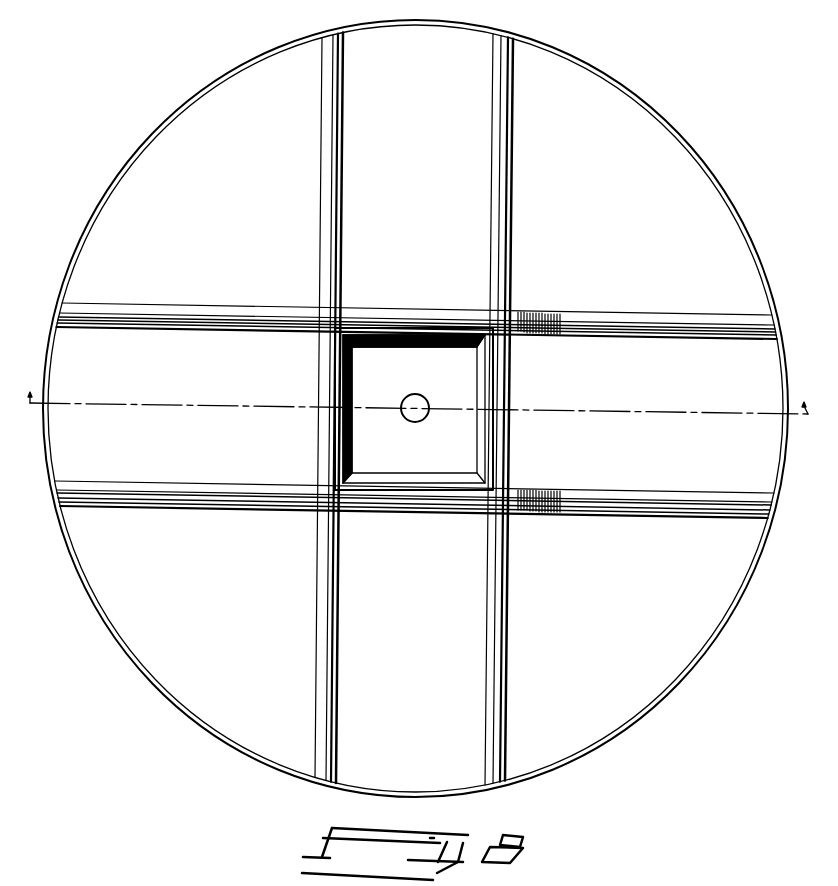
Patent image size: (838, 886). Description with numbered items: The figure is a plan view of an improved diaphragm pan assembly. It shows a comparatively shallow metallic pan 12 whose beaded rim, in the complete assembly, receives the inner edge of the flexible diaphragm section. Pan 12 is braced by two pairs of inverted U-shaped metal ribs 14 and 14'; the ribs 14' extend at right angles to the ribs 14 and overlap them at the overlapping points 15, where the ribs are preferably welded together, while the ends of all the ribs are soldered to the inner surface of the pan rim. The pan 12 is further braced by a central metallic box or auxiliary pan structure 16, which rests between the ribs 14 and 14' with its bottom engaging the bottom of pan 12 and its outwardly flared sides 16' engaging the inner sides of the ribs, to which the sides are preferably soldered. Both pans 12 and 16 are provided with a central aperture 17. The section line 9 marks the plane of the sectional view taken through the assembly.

The section line 9 is at (412, 419).
The metallic pan 12 is at (705, 275).
The ribs 14 is at (414, 409).
The ribs 14' is at (416, 410).
The overlapping points 15 is at (518, 308).
The auxiliary pan structure 16 is at (414, 439).
The outwardly flared sides 16' is at (415, 409).
The central aperture 17 is at (412, 410).